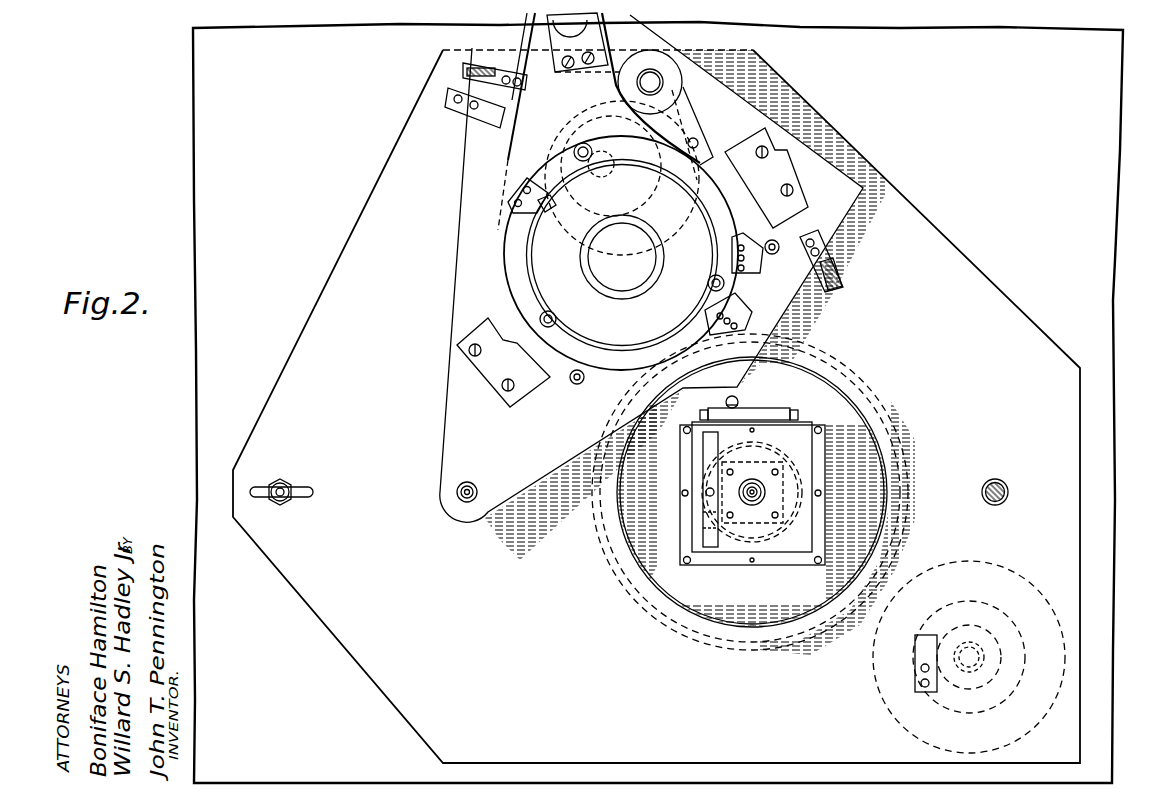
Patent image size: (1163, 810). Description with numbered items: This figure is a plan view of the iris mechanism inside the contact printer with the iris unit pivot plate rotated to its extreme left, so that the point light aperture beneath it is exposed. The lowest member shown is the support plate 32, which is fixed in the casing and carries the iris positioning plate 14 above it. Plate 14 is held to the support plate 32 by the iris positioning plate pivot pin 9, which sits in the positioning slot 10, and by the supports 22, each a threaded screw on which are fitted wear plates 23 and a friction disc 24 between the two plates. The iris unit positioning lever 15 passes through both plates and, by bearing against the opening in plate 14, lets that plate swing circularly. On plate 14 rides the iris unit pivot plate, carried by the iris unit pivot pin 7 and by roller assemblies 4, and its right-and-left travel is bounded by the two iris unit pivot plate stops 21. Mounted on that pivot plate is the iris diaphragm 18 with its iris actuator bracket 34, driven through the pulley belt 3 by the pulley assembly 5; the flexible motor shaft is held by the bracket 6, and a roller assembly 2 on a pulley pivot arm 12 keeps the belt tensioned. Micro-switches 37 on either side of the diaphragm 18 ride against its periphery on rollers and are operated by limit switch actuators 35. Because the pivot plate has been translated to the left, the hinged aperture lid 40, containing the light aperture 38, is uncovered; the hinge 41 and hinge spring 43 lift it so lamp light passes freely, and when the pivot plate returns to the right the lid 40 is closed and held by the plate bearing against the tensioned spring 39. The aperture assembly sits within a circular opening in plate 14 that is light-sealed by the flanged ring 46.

The roller assembly 2 is at (672, 85).
The pulley belt 3 is at (630, 50).
The roller assemblies 4 is at (480, 62).
The pulley assembly 5 is at (545, 30).
The bracket 6 is at (585, 68).
The iris unit pivot pin 7 is at (463, 506).
The iris positioning plate pivot pin 9 is at (283, 500).
The positioning slot 10 is at (305, 497).
The pulley pivot arm 12 is at (700, 120).
The iris positioning plate 14 is at (330, 604).
The iris unit positioning lever 15 is at (993, 480).
The iris diaphragm 18 is at (522, 253).
The iris unit pivot plate stops 21 is at (446, 100).
The supports 22 is at (975, 640).
The wear plates 23 is at (1013, 572).
The friction disc 24 is at (1017, 611).
The support plate 32 is at (1115, 562).
The iris actuator bracket 34 is at (506, 208).
The limit switch actuators 35 is at (762, 274).
The micro-switches 37 is at (800, 190).
The light aperture 38 is at (755, 500).
The tensioned spring 39 is at (705, 458).
The hinged aperture lid 40 is at (805, 446).
The hinge 41 is at (790, 408).
The hinge spring 43 is at (738, 402).
The flanged ring 46 is at (703, 622).